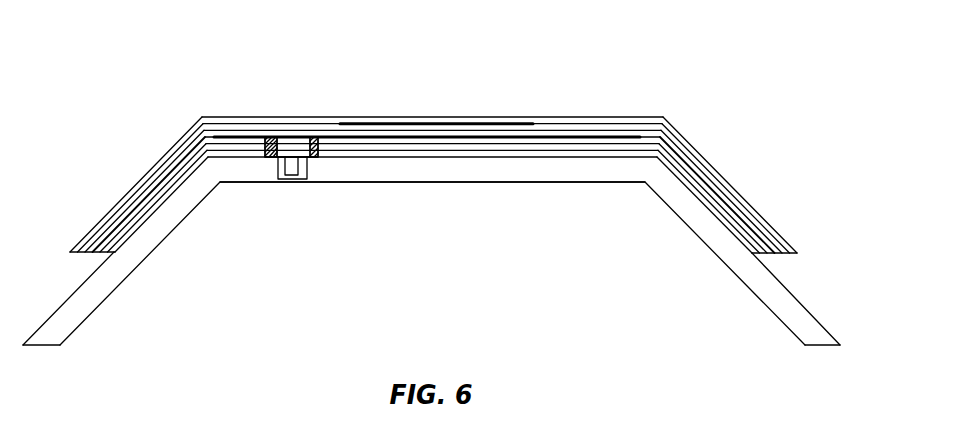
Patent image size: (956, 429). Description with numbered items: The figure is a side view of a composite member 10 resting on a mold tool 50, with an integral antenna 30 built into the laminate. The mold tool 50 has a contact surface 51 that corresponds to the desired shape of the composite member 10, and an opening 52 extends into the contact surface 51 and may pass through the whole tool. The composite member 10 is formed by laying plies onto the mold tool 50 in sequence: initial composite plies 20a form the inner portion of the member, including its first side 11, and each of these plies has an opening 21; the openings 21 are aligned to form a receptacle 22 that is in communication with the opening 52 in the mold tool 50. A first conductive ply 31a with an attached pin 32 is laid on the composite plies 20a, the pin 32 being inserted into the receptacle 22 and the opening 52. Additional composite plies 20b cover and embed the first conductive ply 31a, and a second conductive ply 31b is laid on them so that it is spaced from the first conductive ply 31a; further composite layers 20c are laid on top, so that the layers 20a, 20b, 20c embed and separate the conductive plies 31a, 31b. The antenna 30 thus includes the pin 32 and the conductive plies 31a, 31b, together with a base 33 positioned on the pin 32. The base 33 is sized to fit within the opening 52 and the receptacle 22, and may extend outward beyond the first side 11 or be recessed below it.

The composite member 10 is at (145, 110).
The first side 11 is at (498, 157).
The composite plies 20a is at (688, 170).
The composite plies 20b is at (307, 123).
The composite layers 20c is at (143, 182).
The opening 21 is at (268, 145).
The receptacle 22 is at (320, 148).
The antenna 30 is at (273, 195).
The first conductive ply 31a is at (602, 138).
The second conductive ply 31b is at (498, 118).
The pin 32 is at (293, 176).
The base 33 is at (290, 145).
The mold tool 50 is at (755, 273).
The contact surface 51 is at (805, 308).
The opening 52 is at (300, 182).